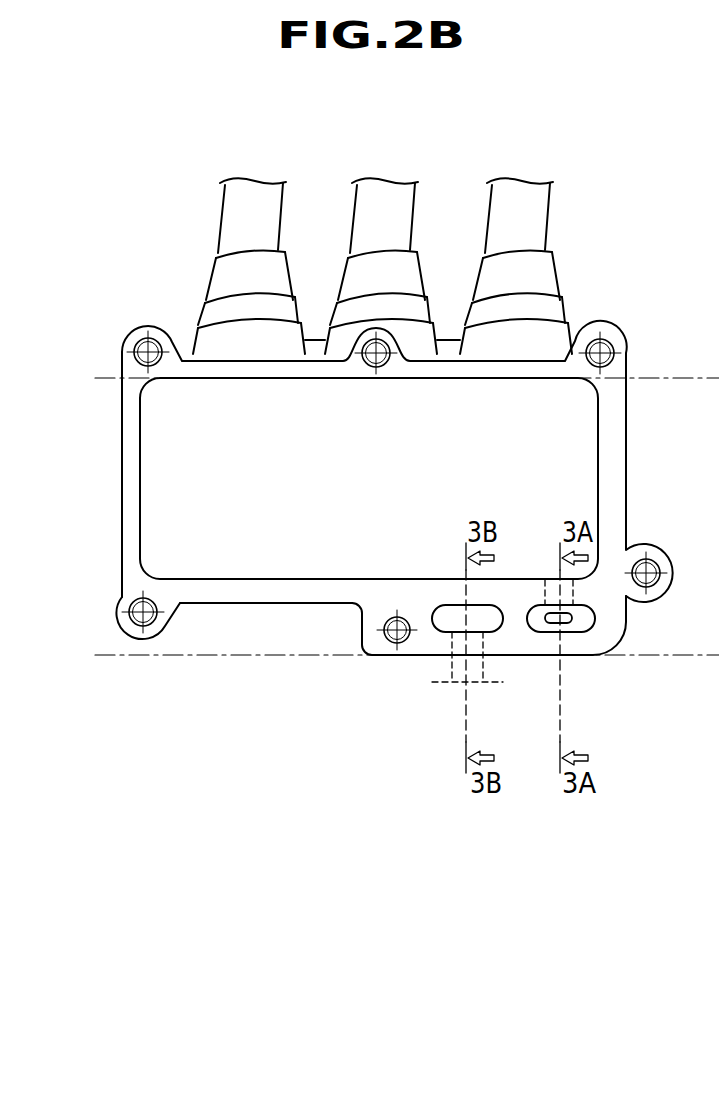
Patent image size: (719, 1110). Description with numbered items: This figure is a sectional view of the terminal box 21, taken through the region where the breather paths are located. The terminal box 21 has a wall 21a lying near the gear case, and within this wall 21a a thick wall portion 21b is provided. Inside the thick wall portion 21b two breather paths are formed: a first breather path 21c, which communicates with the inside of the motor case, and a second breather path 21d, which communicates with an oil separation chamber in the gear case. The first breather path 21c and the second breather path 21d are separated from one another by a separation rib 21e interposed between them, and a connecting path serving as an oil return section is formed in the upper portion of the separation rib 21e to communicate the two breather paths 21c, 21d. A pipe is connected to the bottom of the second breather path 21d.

The terminal box 21 is at (146, 298).
The wall 21a is at (242, 595).
The thick wall portion 21b is at (605, 627).
The first breather path 21c is at (579, 625).
The second breather path 21d is at (447, 623).
The separation rib 21e is at (507, 623).